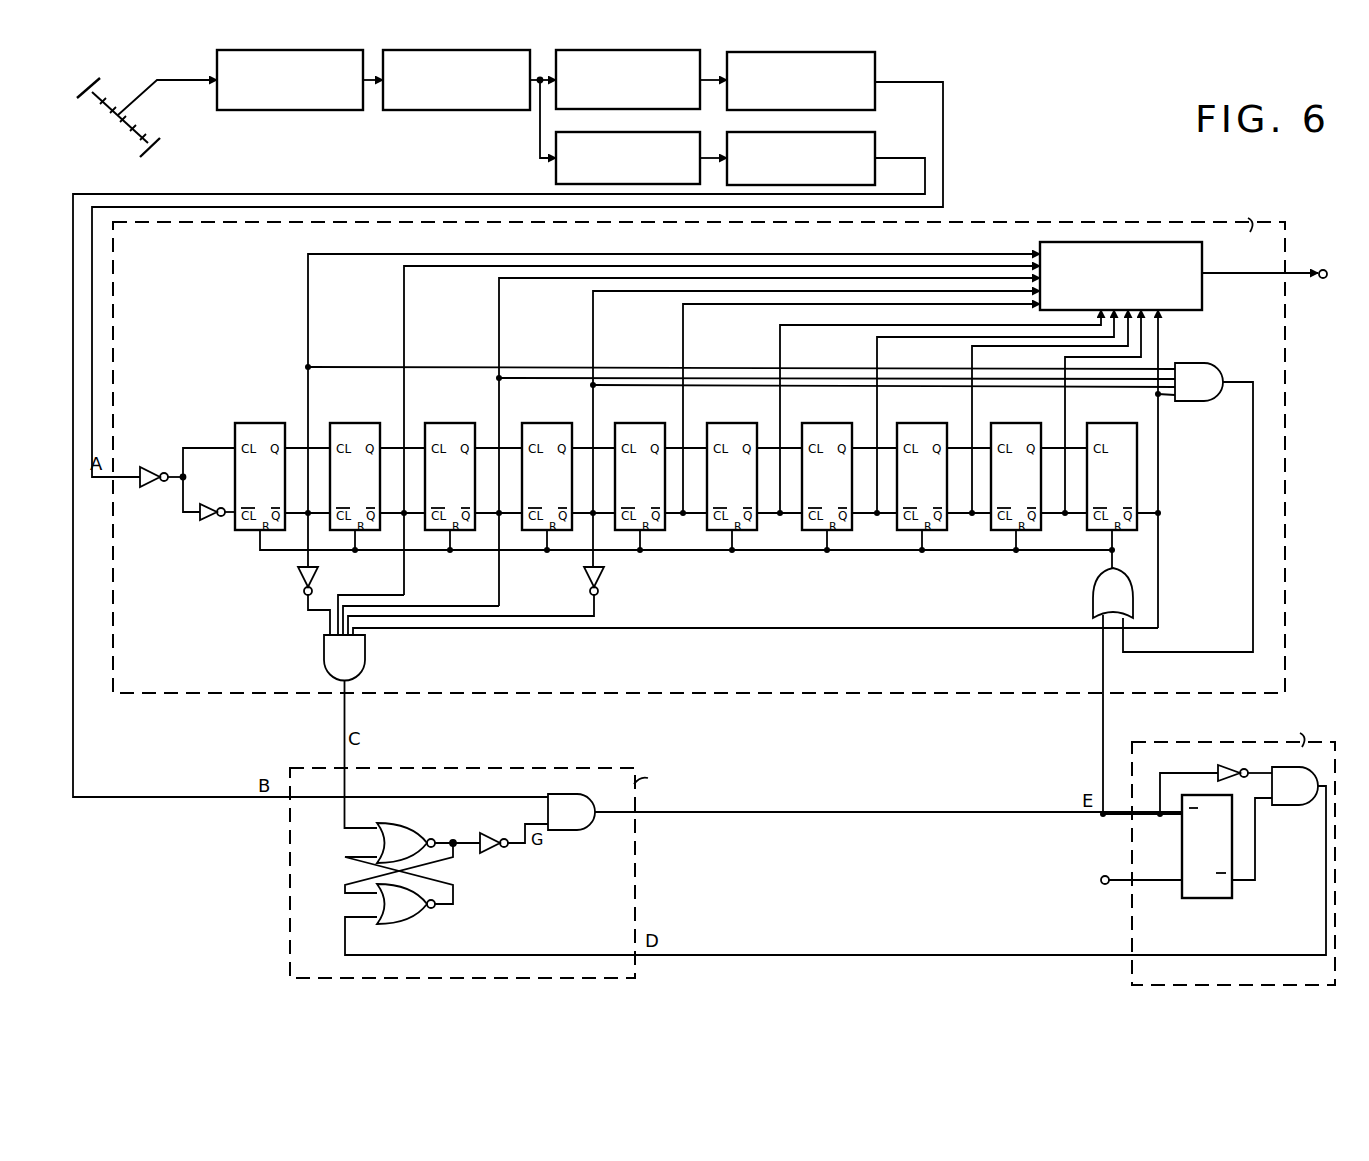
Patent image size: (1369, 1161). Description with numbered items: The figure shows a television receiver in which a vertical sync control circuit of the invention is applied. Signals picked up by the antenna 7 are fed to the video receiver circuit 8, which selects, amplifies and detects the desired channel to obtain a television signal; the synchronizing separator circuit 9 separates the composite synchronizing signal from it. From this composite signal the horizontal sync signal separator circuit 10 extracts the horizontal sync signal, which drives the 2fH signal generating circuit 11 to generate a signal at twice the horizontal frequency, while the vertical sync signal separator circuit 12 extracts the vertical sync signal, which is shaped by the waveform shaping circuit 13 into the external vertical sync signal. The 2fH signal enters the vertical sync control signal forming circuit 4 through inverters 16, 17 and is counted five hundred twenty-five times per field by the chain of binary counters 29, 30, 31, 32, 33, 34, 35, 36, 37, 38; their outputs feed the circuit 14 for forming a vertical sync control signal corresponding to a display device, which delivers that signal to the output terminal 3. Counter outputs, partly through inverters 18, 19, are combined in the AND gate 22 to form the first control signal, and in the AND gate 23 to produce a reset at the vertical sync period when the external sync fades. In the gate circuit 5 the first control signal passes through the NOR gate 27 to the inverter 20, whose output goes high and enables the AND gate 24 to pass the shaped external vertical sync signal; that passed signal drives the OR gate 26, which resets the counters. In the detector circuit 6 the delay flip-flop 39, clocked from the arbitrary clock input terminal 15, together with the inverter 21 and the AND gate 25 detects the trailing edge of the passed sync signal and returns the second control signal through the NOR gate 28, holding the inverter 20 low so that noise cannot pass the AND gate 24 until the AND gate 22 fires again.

The output terminal 3 is at (1322, 270).
The vertical sync control signal forming circuit 4 is at (699, 440).
The gate circuit 5 is at (509, 873).
The detector circuit 6 is at (1233, 853).
The antenna 7 is at (105, 104).
The video receiver circuit 8 is at (299, 112).
The synchronizing separator circuit 9 is at (448, 112).
The horizontal sync signal separator circuit 10 is at (606, 110).
The 2fH signal generating circuit 11 is at (872, 110).
The vertical sync signal separator circuit 12 is at (556, 172).
The waveform shaping circuit 13 is at (875, 145).
The circuit for forming a vertical sync control signal corresponding to a display de 14 is at (1202, 308).
The arbitrary clock input terminal 15 is at (1099, 880).
The inverter 16 is at (158, 462).
The inverter 17 is at (212, 522).
The inverter 18 is at (299, 581).
The inverter 19 is at (600, 581).
The inverter 20 is at (492, 852).
The inverter 21 is at (1227, 771).
The AND gate 22 is at (366, 659).
The AND gate 23 is at (1208, 369).
The AND gate 24 is at (583, 831).
The AND gate 25 is at (1304, 808).
The OR gate 26 is at (1100, 597).
The NOR gate 27 is at (404, 836).
The NOR gate 28 is at (403, 914).
The binary counter 29 is at (260, 465).
The binary counter 30 is at (362, 433).
The binary counter 31 is at (457, 433).
The binary counter 32 is at (554, 433).
The binary counter 33 is at (647, 433).
The binary counter 34 is at (739, 433).
The binary counter 35 is at (834, 433).
The binary counter 36 is at (929, 433).
The binary counter 37 is at (1023, 433).
The binary counter 38 is at (1119, 433).
The delay flip-flop 39 is at (1215, 899).